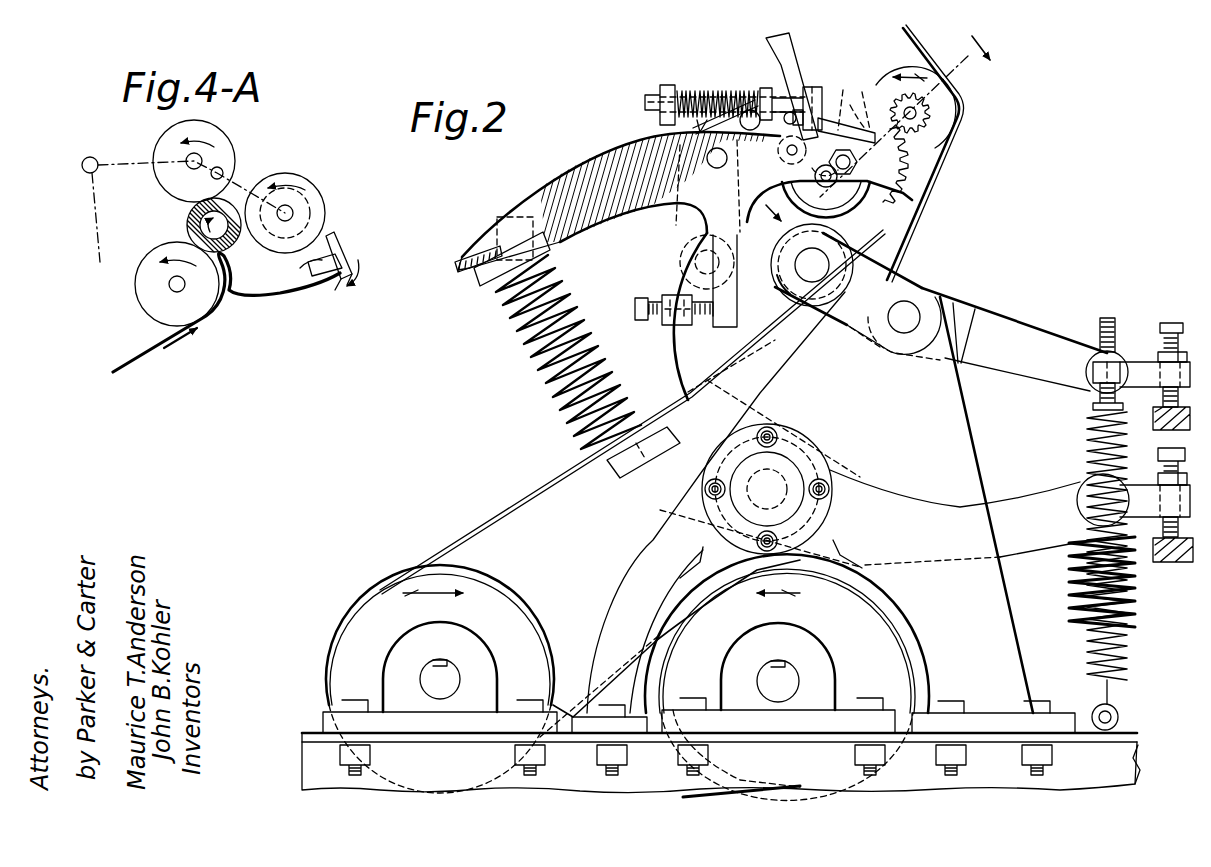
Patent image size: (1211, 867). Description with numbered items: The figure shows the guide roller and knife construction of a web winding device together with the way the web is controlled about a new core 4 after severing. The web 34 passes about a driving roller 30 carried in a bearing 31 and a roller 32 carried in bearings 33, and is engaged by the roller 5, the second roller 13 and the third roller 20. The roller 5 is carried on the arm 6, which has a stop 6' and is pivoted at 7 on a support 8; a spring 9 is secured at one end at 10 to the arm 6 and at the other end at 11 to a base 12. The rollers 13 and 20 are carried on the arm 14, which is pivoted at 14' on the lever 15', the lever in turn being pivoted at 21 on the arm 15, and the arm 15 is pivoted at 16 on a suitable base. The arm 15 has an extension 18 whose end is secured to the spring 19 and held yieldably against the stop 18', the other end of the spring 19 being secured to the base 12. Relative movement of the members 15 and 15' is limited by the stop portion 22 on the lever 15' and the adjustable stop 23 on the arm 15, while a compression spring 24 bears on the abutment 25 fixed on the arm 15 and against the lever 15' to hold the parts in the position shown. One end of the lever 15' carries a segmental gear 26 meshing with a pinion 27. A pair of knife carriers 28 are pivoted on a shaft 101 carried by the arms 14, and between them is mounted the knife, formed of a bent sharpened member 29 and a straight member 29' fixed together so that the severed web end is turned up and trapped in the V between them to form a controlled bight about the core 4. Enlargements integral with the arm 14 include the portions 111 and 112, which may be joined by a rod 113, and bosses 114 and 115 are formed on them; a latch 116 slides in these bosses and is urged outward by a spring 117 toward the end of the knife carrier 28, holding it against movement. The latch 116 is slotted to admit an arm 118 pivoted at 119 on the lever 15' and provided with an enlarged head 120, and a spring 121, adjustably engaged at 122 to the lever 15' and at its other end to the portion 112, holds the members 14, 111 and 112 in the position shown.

In FIG. 4A, the core 4 is at (187, 222).
In FIG. 4A, the roller 5 is at (145, 302).
In FIG. 2, the roller 5 is at (772, 259).
In FIG. 2, the arm 6 is at (1014, 339).
In FIG. 2, the stop 6' is at (1155, 388).
In FIG. 2, the pivot 7 is at (910, 312).
In FIG. 2, the support 8 is at (978, 441).
In FIG. 2, the spring 9 is at (1125, 641).
In FIG. 2, the spring securing point 10 is at (1113, 362).
In FIG. 2, the spring securing point 11 is at (1120, 717).
In FIG. 2, the base 12 is at (1138, 738).
In FIG. 4A, the second roller 13 is at (232, 136).
In FIG. 2, the second roller 13 is at (843, 213).
In FIG. 2, the arm 14 is at (849, 191).
In FIG. 2, the pivot 14' is at (832, 179).
In FIG. 4A, the arm 15 is at (75, 217).
In FIG. 2, the arm 15 is at (728, 270).
In FIG. 4A, the lever 15' is at (191, 172).
In FIG. 2, the lever 15' is at (617, 177).
In FIG. 2, the pivot 16 is at (775, 487).
In FIG. 2, the extension 18 is at (1010, 506).
In FIG. 2, the stop 18' is at (1166, 564).
In FIG. 2, the spring 19 is at (1068, 578).
In FIG. 4A, the third roller 20 is at (322, 198).
In FIG. 2, the third roller 20 is at (955, 114).
In FIG. 4A, the pivot 21 is at (81, 165).
In FIG. 2, the pivot 21 is at (712, 167).
In FIG. 2, the stop portion 22 is at (722, 331).
In FIG. 2, the adjustable stop 23 is at (655, 298).
In FIG. 2, the compression spring 24 is at (545, 271).
In FIG. 2, the abutment 25 is at (620, 469).
In FIG. 2, the segmental gear 26 is at (915, 169).
In FIG. 2, the pinion 27 is at (928, 113).
In FIG. 4A, the knife carrier 28 is at (340, 241).
In FIG. 2, the knife carrier 28 is at (866, 118).
In FIG. 4A, the knife 29 is at (322, 291).
In FIG. 2, the knife 29 is at (854, 96).
In FIG. 4A, the straight member 29' is at (295, 269).
In FIG. 2, the straight member 29' is at (858, 107).
In FIG. 2, the roller 30 is at (512, 591).
In FIG. 2, the bearing 31 is at (478, 663).
In FIG. 2, the roller 32 is at (862, 629).
In FIG. 2, the bearings 33 is at (840, 674).
In FIG. 4A, the web 34 is at (152, 359).
In FIG. 2, the web 34 is at (470, 531).
In FIG. 2, the shaft 101 is at (948, 77).
In FIG. 2, the portion 111 is at (762, 97).
In FIG. 2, the portion 112 is at (665, 213).
In FIG. 2, the rod 113 is at (682, 263).
In FIG. 2, the boss 114 is at (664, 88).
In FIG. 2, the boss 115 is at (811, 100).
In FIG. 2, the latch 116 is at (750, 109).
In FIG. 2, the spring 117 is at (700, 91).
In FIG. 2, the arm 118 is at (810, 86).
In FIG. 2, the pivot 119 is at (788, 155).
In FIG. 2, the enlarged head 120 is at (790, 45).
In FIG. 2, the spring 121 is at (652, 191).
In FIG. 2, the adjustable engagement point 122 is at (505, 225).